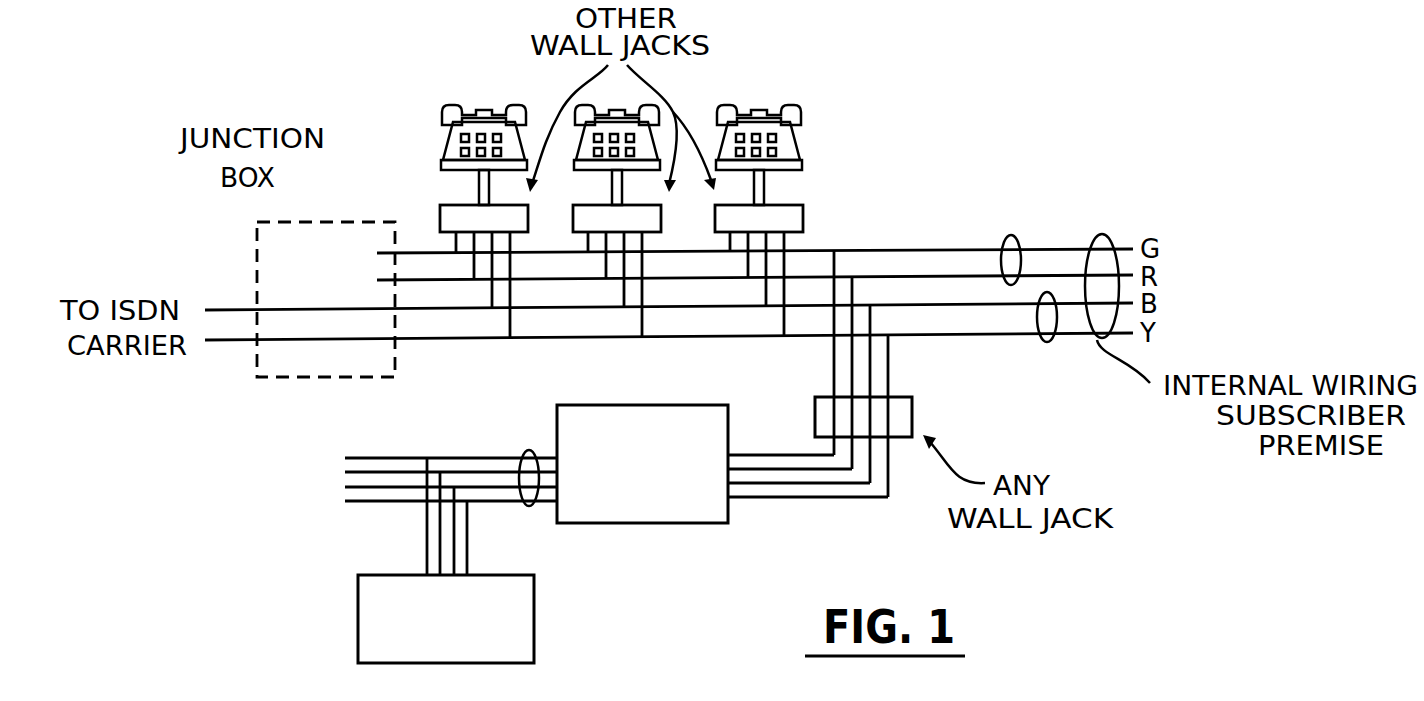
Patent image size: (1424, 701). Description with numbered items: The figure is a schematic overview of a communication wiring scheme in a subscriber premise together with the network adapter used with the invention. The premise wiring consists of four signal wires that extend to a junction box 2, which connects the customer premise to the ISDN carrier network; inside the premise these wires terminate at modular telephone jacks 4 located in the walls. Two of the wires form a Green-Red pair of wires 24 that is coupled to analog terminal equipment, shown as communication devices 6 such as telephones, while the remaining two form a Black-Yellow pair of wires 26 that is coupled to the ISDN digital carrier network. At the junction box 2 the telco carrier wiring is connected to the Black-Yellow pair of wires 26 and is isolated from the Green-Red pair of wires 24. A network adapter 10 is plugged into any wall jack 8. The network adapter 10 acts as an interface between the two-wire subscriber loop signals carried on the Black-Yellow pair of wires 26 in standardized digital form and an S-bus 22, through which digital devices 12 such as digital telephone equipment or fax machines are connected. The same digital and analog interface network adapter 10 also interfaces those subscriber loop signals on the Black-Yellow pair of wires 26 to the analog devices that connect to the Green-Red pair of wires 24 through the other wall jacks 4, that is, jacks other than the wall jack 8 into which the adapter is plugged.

The junction box 2 is at (290, 222).
The modular telephone jacks 4 is at (440, 208).
The communication devices 6 is at (443, 142).
The wall jack 8 is at (912, 400).
The network adapter 10 is at (622, 405).
The digital devices 12 is at (534, 608).
The S-bus 22 is at (528, 450).
The Green-Red pair of wires 24 is at (1010, 235).
The Black-Yellow pair of wires 26 is at (1046, 342).